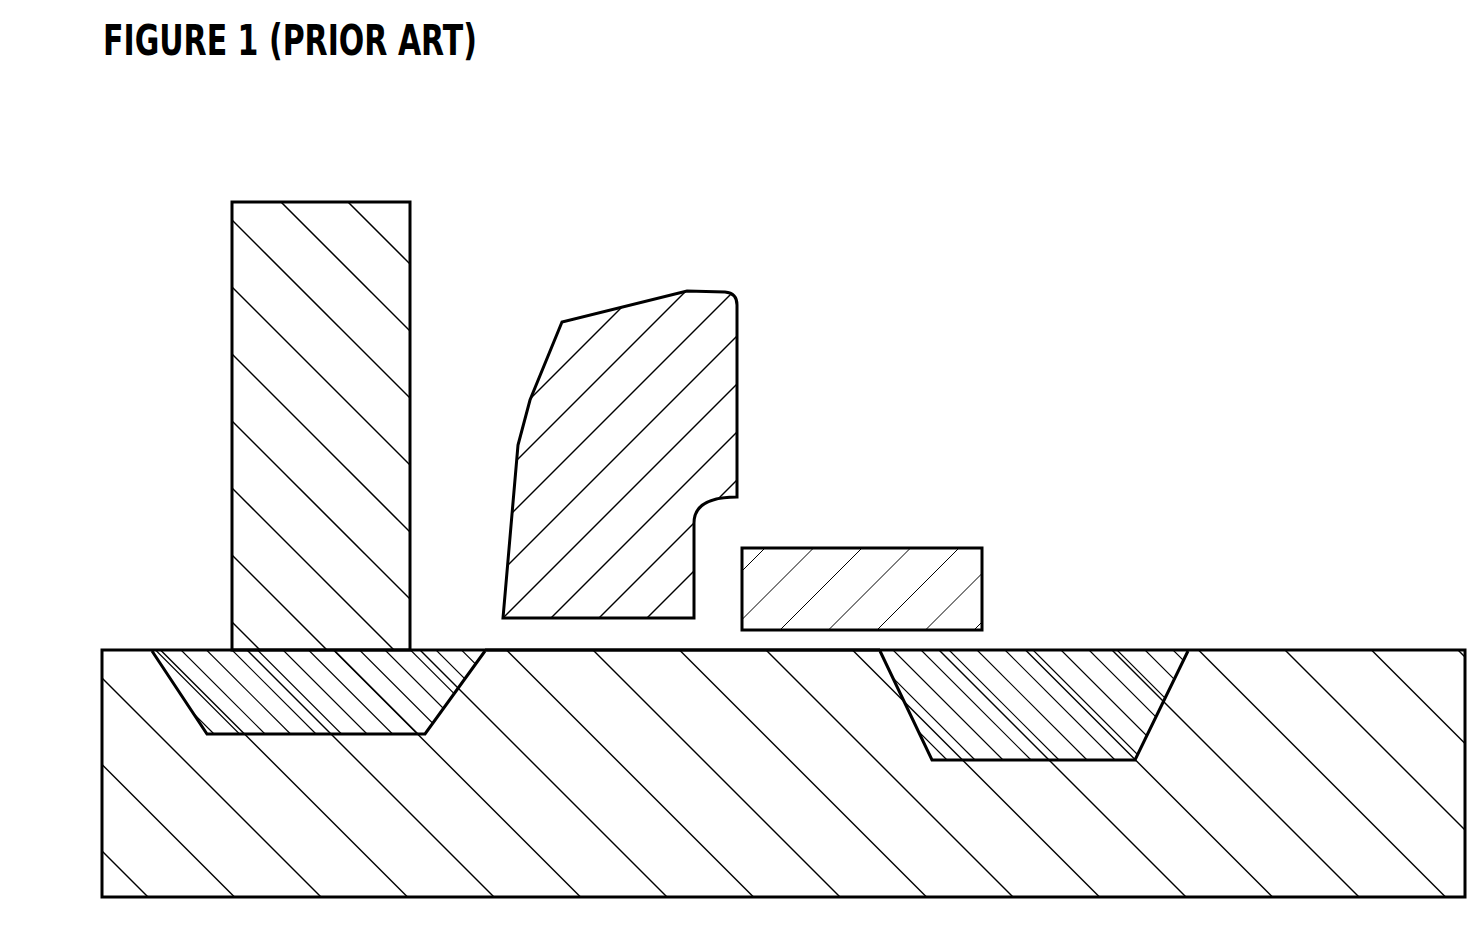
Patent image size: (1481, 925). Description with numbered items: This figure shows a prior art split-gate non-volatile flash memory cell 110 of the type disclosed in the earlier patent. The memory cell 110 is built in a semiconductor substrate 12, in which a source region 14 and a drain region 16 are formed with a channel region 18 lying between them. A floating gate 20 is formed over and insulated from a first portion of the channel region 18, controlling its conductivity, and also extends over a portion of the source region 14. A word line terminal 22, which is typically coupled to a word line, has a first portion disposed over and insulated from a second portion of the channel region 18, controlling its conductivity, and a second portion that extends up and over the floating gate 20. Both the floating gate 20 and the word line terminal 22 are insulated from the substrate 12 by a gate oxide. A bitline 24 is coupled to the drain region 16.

The memory cell 110 is at (887, 191).
The semiconductor substrate 12 is at (1368, 860).
The source region 14 is at (1072, 705).
The drain region 16 is at (308, 698).
The channel region 18 is at (716, 720).
The floating gate 20 is at (893, 597).
The word line terminal 22 is at (613, 391).
The bitline 24 is at (303, 308).